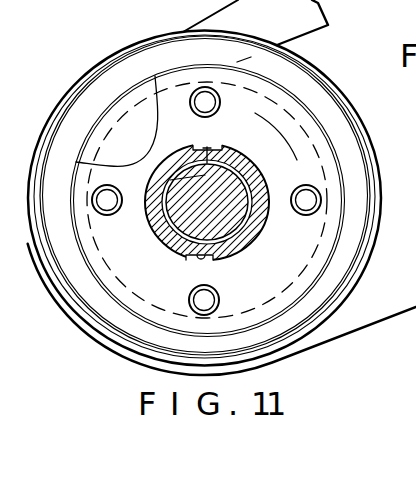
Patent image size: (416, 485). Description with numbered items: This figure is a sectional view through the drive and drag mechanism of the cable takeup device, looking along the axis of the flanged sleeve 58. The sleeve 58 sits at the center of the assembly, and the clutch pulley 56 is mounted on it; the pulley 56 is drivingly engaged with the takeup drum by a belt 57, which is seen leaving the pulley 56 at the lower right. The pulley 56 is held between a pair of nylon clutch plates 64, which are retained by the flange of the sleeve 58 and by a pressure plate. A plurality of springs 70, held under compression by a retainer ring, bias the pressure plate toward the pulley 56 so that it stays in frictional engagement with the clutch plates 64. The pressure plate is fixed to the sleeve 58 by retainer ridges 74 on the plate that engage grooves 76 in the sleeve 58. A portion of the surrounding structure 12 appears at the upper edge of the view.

The frame bracket 12 is at (252, 22).
The clutch pulley 56 is at (364, 148).
The belt 57 is at (397, 310).
The flanged sleeve 58 is at (256, 148).
The nylon clutch plates 64 is at (100, 126).
The springs 70 is at (221, 107).
The retainer ridges 74 is at (207, 146).
The grooves 76 is at (202, 167).